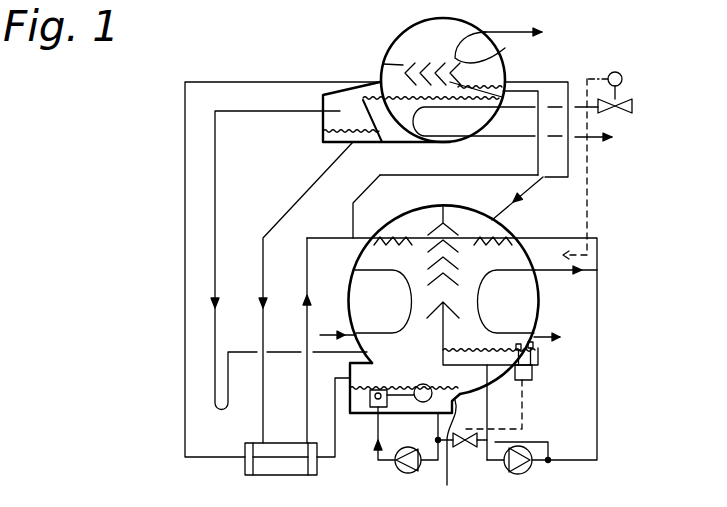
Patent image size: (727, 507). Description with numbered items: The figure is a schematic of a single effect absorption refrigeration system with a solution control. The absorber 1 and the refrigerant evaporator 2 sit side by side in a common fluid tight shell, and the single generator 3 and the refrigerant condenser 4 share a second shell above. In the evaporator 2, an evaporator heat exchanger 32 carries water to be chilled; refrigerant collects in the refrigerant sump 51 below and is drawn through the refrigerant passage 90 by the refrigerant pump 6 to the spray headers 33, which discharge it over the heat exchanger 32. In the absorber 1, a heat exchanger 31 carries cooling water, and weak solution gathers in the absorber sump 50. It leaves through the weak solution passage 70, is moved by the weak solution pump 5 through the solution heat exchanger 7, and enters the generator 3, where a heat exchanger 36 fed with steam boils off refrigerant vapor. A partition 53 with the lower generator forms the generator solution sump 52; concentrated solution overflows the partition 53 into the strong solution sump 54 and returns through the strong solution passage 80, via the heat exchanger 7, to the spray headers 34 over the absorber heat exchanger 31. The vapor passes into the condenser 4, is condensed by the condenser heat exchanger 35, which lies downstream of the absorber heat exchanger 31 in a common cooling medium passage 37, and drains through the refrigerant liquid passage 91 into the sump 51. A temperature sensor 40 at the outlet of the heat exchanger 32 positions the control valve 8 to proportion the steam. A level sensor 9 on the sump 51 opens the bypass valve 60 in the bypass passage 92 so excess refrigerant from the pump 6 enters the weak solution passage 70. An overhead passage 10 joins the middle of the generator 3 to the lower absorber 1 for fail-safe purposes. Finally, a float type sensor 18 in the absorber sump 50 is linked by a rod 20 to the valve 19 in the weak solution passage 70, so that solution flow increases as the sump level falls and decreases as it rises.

The absorber 1 is at (372, 322).
The refrigerant evaporator 2 is at (502, 309).
The single generator 3 is at (438, 128).
The refrigerant condenser 4 is at (421, 49).
The weak solution pump 5 is at (397, 470).
The refrigerant pump 6 is at (526, 472).
The solution heat exchanger 7 is at (280, 475).
The control valve 8 is at (615, 113).
The level sensor 9 is at (535, 380).
The overhead passage 10 is at (216, 278).
The float type sensor 18 is at (418, 383).
The valve 19 is at (370, 408).
The rod 20 is at (399, 402).
The heat exchanger 31 is at (386, 268).
The evaporator heat exchanger 32 is at (497, 266).
The spray headers 33 is at (503, 237).
The spray headers 34 is at (393, 237).
The condenser heat exchanger 35 is at (493, 52).
The heat exchanger 36 is at (492, 140).
The common cooling medium passage 37 is at (366, 189).
The temperature sensor 40 is at (558, 254).
The absorber sump 50 is at (452, 452).
The refrigerant sump 51 is at (500, 412).
The generator solution sump 52 is at (392, 143).
The partition 53 is at (375, 123).
The strong solution sump 54 is at (323, 138).
The bypass valve 60 is at (471, 447).
The weak solution passage 70 is at (185, 418).
The strong solution passage 80 is at (283, 217).
The refrigerant passage 90 is at (489, 463).
The refrigerant liquid passage 91 is at (530, 151).
The bypass passage 92 is at (548, 441).